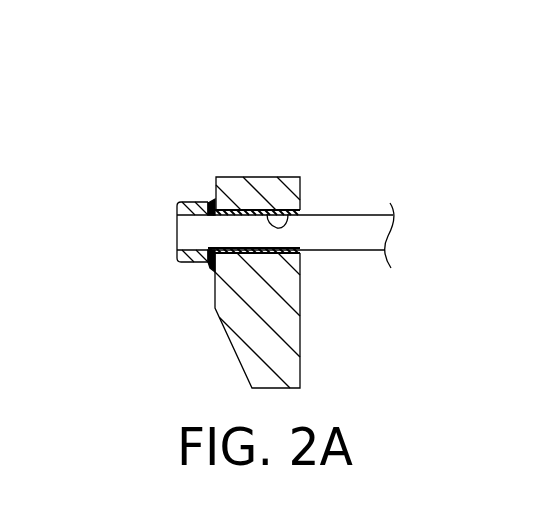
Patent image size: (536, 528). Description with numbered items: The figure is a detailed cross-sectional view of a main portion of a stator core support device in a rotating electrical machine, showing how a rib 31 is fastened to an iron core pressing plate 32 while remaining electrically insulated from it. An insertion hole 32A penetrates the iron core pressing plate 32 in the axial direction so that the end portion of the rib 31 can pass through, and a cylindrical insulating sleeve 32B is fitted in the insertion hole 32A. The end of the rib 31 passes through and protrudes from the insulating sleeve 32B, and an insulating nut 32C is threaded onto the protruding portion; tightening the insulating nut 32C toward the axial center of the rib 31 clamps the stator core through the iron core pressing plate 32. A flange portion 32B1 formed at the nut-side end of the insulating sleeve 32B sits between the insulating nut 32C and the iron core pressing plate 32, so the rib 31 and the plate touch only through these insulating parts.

The rib 31 is at (349, 229).
The iron core pressing plate 32 is at (260, 185).
The insertion hole 32A is at (288, 214).
The insulating sleeve 32B is at (233, 210).
The flange portion 32B1 is at (210, 202).
The insulating nut 32C is at (190, 204).